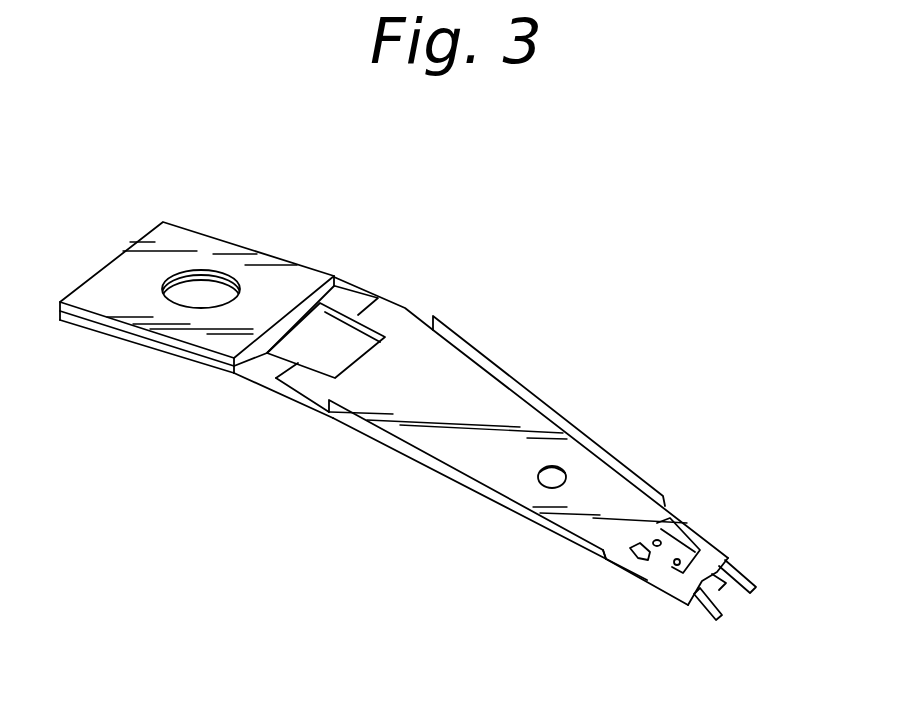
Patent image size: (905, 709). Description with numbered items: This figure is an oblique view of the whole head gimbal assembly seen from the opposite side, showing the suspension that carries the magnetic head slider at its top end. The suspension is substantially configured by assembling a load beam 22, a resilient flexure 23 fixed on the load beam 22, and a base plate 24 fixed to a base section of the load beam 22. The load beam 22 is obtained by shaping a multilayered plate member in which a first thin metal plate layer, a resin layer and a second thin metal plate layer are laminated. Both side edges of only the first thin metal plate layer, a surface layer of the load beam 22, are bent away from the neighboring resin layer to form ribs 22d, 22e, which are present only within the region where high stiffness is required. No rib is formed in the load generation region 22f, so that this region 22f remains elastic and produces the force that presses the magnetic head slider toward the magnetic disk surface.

The load beam 22 is at (435, 372).
The rib 22d is at (493, 495).
The rib 22e is at (597, 440).
The load generation region 22f is at (361, 298).
The resilient flexure 23 is at (663, 570).
The base plate 24 is at (175, 247).